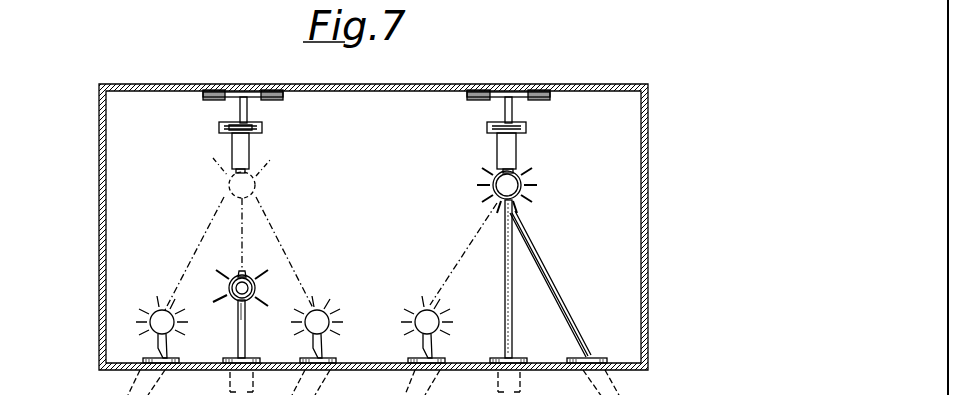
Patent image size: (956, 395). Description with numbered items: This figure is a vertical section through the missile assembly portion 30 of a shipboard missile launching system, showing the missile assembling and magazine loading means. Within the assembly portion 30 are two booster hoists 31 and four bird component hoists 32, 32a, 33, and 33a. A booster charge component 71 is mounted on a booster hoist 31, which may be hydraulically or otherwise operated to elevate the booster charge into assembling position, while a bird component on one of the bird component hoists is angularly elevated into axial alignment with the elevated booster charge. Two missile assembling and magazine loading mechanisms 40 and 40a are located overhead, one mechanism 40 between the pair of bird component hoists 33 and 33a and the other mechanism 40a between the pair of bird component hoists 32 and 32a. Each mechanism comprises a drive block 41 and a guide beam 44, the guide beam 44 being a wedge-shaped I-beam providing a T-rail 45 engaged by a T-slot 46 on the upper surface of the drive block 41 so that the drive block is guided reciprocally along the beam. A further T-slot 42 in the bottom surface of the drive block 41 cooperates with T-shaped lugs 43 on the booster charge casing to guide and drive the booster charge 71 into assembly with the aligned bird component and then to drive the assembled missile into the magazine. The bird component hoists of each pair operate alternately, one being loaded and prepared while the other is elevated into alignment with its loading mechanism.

The missile assembly portion 30 is at (150, 187).
The booster hoist 31 is at (251, 333).
The bird component hoist 32 is at (600, 386).
The bird component hoist 32a is at (414, 389).
The bird component hoist 33 is at (318, 391).
The bird component hoist 33a is at (135, 381).
The missile assembling and magazine loading mechanism 40 is at (224, 200).
The missile assembling and magazine loading mechanism 40a is at (521, 143).
The drive block 41 is at (250, 150).
The T-slot 42 is at (252, 170).
The T-shaped lugs 43 is at (258, 186).
The guide beam 44 is at (230, 101).
The T-rail 45 is at (254, 124).
The T-slot 46 is at (262, 132).
The booster charge component 71 is at (253, 281).